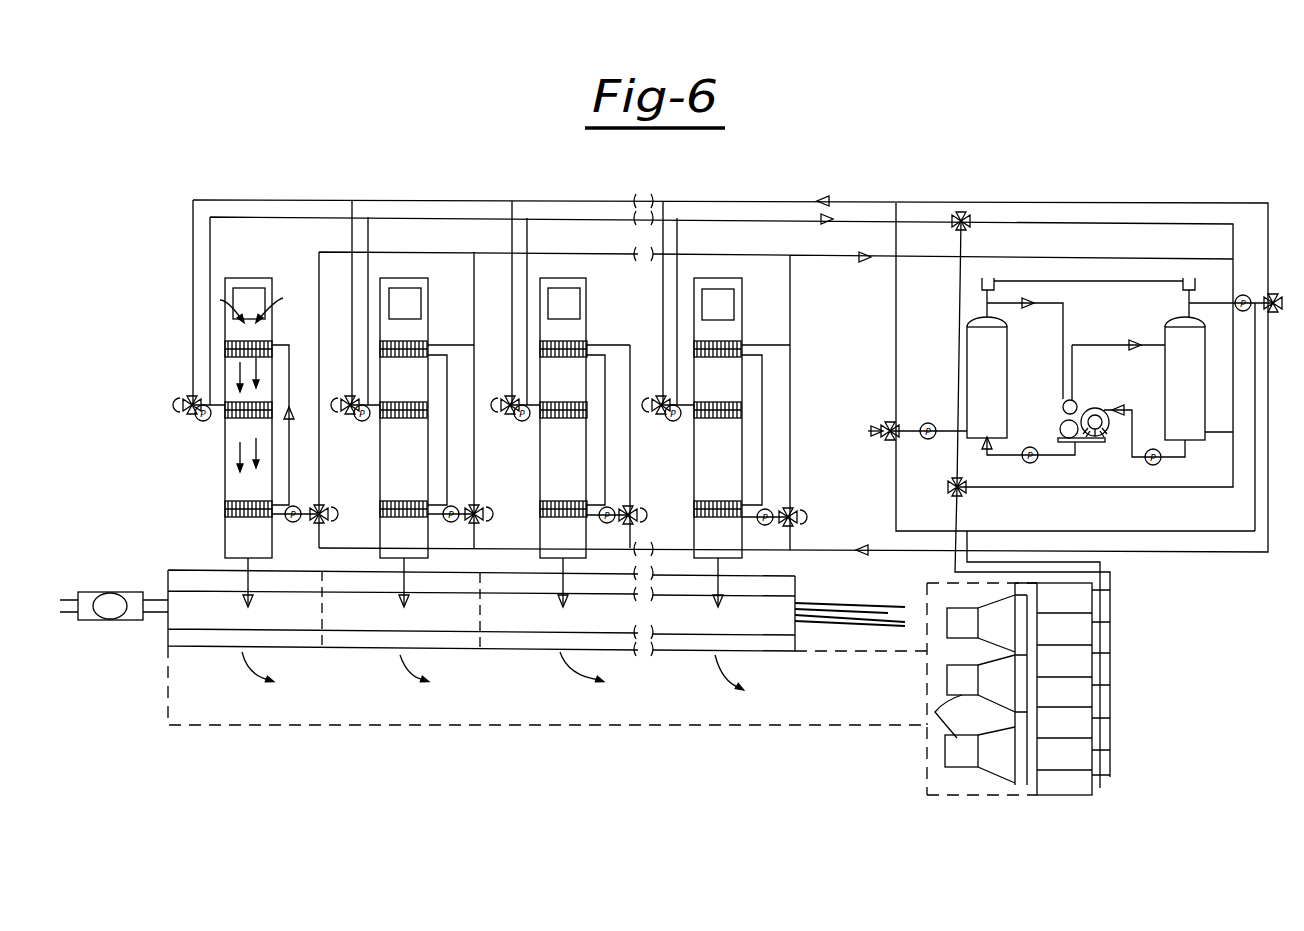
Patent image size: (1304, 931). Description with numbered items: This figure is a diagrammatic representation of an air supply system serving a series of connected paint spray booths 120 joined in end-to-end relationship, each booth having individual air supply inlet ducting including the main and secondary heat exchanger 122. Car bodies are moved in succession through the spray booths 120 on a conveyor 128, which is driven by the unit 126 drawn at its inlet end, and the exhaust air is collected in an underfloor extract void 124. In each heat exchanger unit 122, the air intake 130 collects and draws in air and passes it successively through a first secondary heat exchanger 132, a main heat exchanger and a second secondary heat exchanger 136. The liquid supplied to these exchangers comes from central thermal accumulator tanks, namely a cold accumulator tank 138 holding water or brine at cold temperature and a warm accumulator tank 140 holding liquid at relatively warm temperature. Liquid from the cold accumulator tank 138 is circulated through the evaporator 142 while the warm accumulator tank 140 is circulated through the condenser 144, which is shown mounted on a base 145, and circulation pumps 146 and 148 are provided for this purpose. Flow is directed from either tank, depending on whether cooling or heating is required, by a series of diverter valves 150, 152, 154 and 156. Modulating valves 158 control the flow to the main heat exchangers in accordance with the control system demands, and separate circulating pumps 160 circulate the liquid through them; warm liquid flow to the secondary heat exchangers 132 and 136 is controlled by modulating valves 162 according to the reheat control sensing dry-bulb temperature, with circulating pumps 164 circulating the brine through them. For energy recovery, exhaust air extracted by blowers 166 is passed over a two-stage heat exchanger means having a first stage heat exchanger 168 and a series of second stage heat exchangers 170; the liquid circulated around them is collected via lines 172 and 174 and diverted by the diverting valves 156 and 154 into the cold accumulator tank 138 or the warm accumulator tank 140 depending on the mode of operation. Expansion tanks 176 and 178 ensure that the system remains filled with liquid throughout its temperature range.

The spray booths 120 is at (365, 638).
The main and secondary heat exchanger 122 is at (224, 466).
The underfloor extract void 124 is at (395, 708).
The pump 126 is at (98, 592).
The conveyor 128 is at (160, 596).
The air intake 130 is at (251, 291).
The first secondary heat exchanger 132 is at (270, 342).
The second secondary heat exchanger 136 is at (232, 400).
The cold thermal accumulator tank 138 is at (967, 373).
The warm thermal accumulator tank 140 is at (1168, 345).
The evaporator 142 is at (1060, 431).
The condenser 144 is at (1076, 402).
The pump base 145 is at (1108, 447).
The circulation pump 146 is at (1027, 464).
The circulation pump 148 is at (1149, 466).
The diverter valve 150 is at (187, 401).
The diverter valve 152 is at (967, 216).
The diverter valve 154 is at (1277, 295).
The diverter valve 156 is at (950, 488).
The modulating valve 158 is at (343, 409).
The circulating pump 160 is at (200, 421).
The modulating valve 162 is at (325, 511).
The circulating pump 164 is at (296, 523).
The blower 166 is at (975, 599).
The first stage heat exchanger 168 is at (1005, 653).
The second stage heat exchanger 170 is at (1090, 665).
The line 172 is at (1112, 593).
The line 174 is at (1090, 577).
The expansion tank 176 is at (998, 280).
The expansion tank 178 is at (1192, 279).